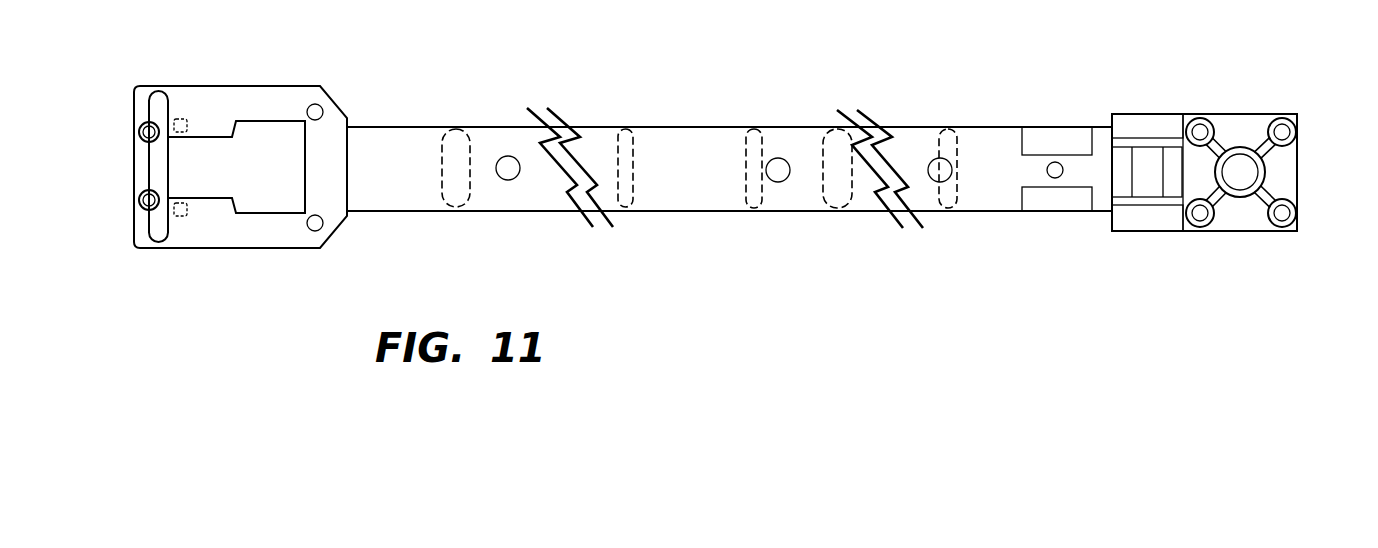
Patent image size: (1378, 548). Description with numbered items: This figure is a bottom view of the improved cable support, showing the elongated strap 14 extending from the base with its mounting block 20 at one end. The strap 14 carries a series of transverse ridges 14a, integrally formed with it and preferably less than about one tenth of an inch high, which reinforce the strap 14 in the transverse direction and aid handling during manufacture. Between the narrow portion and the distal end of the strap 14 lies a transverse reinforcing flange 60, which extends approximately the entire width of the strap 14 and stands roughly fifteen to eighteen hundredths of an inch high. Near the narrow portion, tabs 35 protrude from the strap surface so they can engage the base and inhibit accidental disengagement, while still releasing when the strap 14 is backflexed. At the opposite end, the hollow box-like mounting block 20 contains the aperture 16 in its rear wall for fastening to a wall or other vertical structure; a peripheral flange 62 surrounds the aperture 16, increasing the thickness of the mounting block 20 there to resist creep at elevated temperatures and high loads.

The strap 14 is at (510, 138).
The transverse ridges 14a is at (455, 140).
The aperture 16 is at (1240, 175).
The mounting block 20 is at (1237, 127).
The tabs 35 is at (147, 128).
The transverse reinforcing flange 60 is at (156, 96).
The peripheral flange 62 is at (1282, 173).